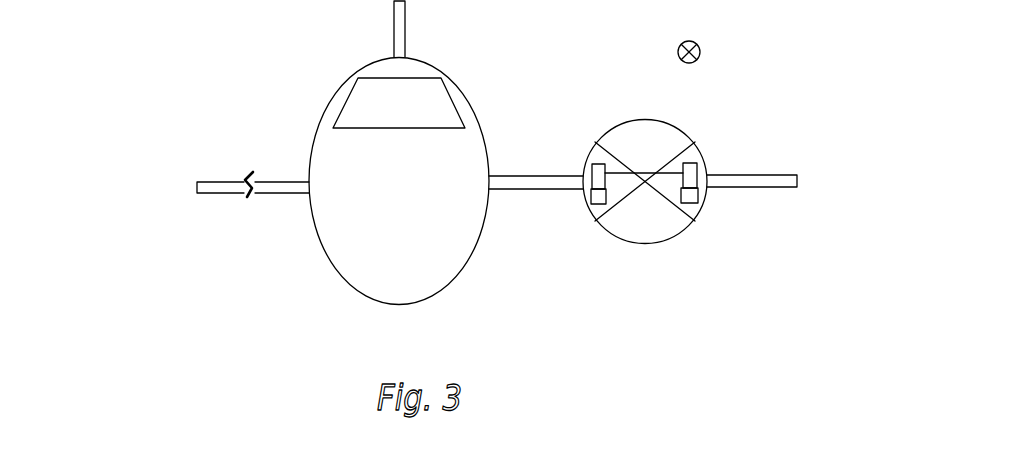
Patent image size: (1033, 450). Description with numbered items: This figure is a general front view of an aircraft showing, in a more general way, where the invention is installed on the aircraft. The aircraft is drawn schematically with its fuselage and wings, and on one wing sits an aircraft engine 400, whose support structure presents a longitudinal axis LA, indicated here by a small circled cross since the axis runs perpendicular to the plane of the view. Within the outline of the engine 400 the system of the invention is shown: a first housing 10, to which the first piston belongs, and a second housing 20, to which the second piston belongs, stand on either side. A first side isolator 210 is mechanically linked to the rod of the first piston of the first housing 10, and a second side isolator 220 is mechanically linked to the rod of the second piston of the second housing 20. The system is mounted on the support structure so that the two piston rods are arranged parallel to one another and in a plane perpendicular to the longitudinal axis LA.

The first housing 10 is at (593, 147).
The second housing 20 is at (695, 147).
The first side isolator 210 is at (590, 225).
The second side isolator 220 is at (699, 226).
The aircraft engine 400 is at (644, 128).
The longitudinal axis LA is at (707, 45).